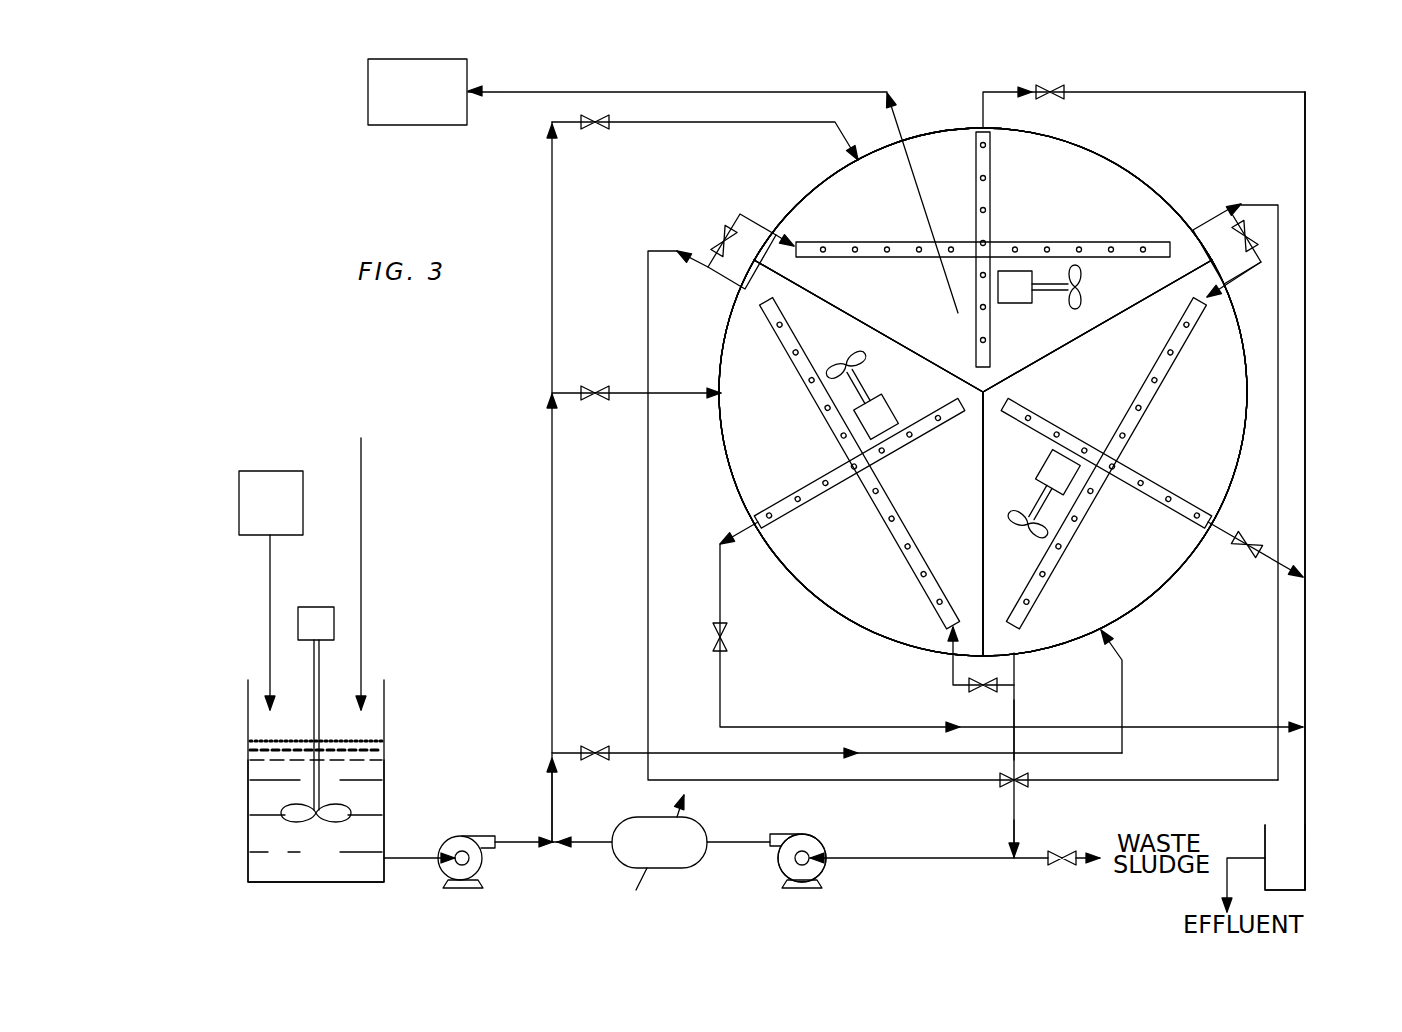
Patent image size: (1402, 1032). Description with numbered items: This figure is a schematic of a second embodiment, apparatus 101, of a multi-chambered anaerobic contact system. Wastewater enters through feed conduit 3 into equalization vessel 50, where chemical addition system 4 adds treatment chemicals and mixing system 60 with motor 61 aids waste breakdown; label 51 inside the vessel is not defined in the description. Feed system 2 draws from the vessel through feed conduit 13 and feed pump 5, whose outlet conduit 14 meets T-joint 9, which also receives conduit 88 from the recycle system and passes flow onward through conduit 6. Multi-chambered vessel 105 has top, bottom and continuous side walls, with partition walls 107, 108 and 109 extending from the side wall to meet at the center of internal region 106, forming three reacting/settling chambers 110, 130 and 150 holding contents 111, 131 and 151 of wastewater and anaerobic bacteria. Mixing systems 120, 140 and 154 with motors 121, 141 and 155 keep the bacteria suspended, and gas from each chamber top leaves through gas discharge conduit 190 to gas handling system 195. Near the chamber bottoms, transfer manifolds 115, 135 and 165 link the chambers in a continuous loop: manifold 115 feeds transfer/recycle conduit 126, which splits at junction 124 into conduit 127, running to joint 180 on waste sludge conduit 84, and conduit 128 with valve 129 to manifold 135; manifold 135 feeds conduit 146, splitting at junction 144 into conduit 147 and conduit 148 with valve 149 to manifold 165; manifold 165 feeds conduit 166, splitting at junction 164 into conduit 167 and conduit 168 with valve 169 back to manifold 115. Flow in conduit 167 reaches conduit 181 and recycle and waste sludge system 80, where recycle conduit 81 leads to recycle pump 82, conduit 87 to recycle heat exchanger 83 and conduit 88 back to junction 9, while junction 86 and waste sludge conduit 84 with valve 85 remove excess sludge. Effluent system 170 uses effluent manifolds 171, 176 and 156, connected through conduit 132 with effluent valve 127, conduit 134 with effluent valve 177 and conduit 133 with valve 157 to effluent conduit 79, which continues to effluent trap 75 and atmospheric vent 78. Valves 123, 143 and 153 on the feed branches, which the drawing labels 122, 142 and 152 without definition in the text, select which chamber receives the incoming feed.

The feed system 2 is at (505, 765).
The wastewater feed conduit 3 is at (362, 520).
The chemical addition system 4 is at (239, 504).
The feed pump 5 is at (460, 836).
The conduit 6 is at (550, 778).
The T-joint 9 is at (560, 838).
The feed conduit 13 is at (416, 860).
The conduit 14 is at (514, 840).
The equalization vessel 50 is at (248, 804).
The tank liquid 51 is at (302, 866).
The mixing system 60 is at (312, 772).
The motor 61 is at (312, 606).
The effluent trap 75 is at (1308, 866).
The atmospheric vent 78 is at (1262, 844).
The effluent conduit 79 is at (1308, 676).
The recycle and waste sludge system 80 is at (841, 834).
The recycle conduit 81 is at (935, 862).
The recycle pump 82 is at (828, 868).
The recycle heat exchanger 83 is at (672, 870).
The waste sludge conduit 84 is at (1022, 862).
The valve 85 is at (1062, 868).
The junction 86 is at (1010, 856).
The conduit 87 is at (740, 840).
The conduit 88 is at (586, 846).
The apparatus 101 is at (324, 367).
The multi-chambered vessel 105 is at (1094, 152).
The internal region 106 is at (983, 458).
The partition wall 107 is at (905, 346).
The partition wall 108 is at (1043, 358).
The partition wall 109 is at (983, 490).
The reacting/settling chamber 110 is at (838, 185).
The contents 111 is at (852, 296).
The transfer manifold 115 is at (878, 240).
The mixing system 120 is at (1084, 288).
The motor 121 is at (1018, 270).
The feed pipe 122 is at (738, 126).
The valve 123 is at (606, 130).
The junction 124 is at (1222, 216).
The transfer/recycle conduit 126 is at (1198, 224).
The conduit / effluent valve 127 is at (1060, 89).
The conduit 128 is at (1245, 276).
The valve 129 is at (1252, 240).
The reacting/settling chamber 130 is at (1151, 605).
The contents 131 is at (1104, 569).
The conduit 132 is at (983, 106).
The conduit 133 is at (723, 592).
The conduit 134 is at (1228, 546).
The transfer manifold 135 is at (1158, 366).
The mixing system 140 is at (1022, 535).
The motor 141 is at (1045, 462).
The feed pipe 142 is at (628, 390).
The valve 143 is at (604, 402).
The junction 144 is at (1018, 684).
The transfer/recycle conduit 146 is at (1016, 666).
The conduit 147 is at (1016, 702).
The conduit 148 is at (953, 668).
The valve 149 is at (975, 690).
The reacting/settling chamber 150 is at (856, 631).
The contents 151 is at (829, 569).
The feed pipe 152 is at (686, 750).
The valve 153 is at (600, 745).
The mixing system 154 is at (843, 362).
The motor 155 is at (888, 415).
The effluent manifold 156 is at (800, 490).
The valve 157 is at (718, 620).
The junction 164 is at (714, 272).
The transfer manifold 165 is at (800, 398).
The transfer/recycle conduit 166 is at (728, 292).
The conduit 167 is at (648, 300).
The conduit 168 is at (752, 218).
The valve 169 is at (728, 233).
The effluent system 170 is at (1353, 491).
The effluent manifold 171 is at (992, 182).
The effluent manifold 176 is at (1162, 488).
The effluent valve 177 is at (1246, 560).
The joint 180 is at (1004, 783).
The conduit 181 is at (1017, 800).
The gas discharge conduit 190 is at (690, 90).
The gas handling system 195 is at (368, 92).